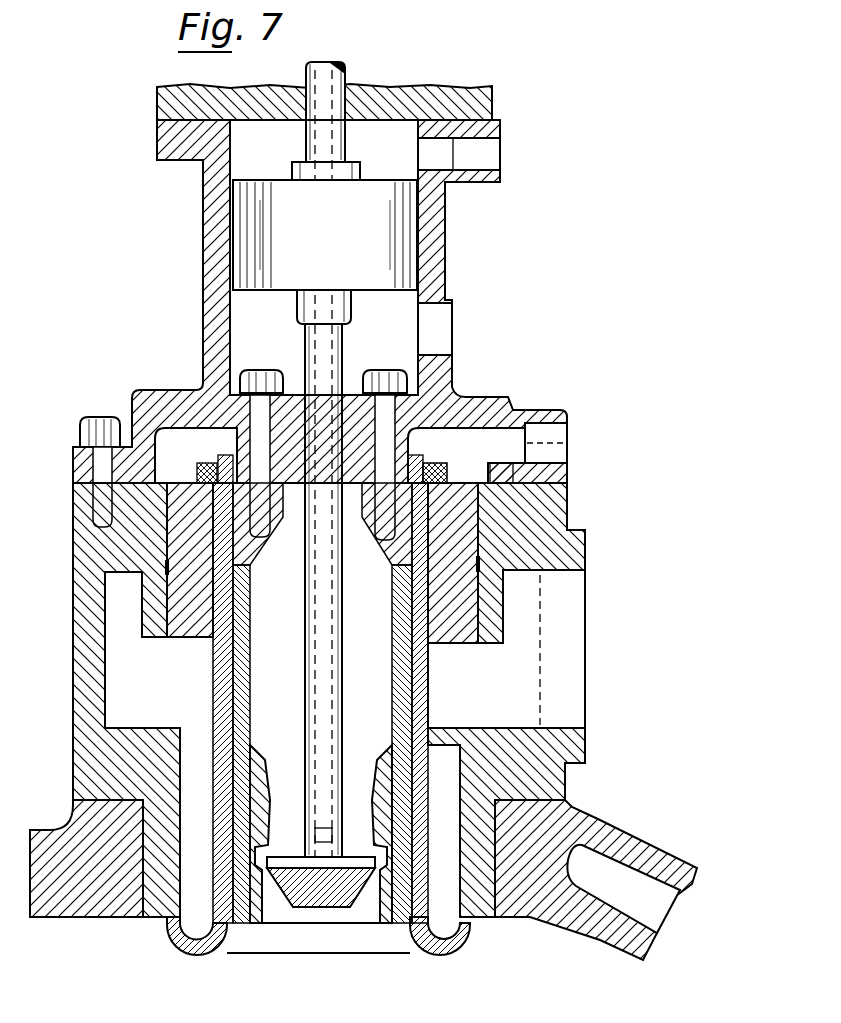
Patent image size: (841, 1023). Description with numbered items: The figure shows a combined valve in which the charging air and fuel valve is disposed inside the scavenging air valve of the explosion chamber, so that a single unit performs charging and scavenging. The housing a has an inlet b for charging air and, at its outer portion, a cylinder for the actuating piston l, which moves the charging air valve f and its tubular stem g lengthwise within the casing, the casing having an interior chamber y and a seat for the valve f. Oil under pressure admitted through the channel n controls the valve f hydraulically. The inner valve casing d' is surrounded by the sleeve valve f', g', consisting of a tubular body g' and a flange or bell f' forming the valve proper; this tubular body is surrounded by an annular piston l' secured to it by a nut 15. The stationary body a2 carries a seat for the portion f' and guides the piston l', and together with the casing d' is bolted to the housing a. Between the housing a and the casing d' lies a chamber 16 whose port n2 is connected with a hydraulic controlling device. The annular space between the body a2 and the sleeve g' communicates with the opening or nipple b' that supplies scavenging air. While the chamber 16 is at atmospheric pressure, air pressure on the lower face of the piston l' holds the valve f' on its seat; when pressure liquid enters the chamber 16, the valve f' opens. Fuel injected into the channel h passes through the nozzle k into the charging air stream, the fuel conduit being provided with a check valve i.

The longitudinal channel h is at (337, 66).
The actuating piston l is at (325, 235).
The channel n is at (497, 153).
The housing a is at (435, 266).
The inlet b is at (464, 323).
The chamber 16 is at (436, 438).
The nut 15 is at (447, 465).
The port n2 is at (558, 444).
The interior chamber y is at (513, 530).
The opening or nipple b' is at (617, 639).
The annular piston l' is at (528, 649).
The tubular stem g is at (259, 703).
The sleeve g' is at (422, 703).
The check valve i is at (312, 835).
The nozzle k is at (308, 878).
The charging air valve f is at (321, 876).
The inner valve casing d' is at (332, 953).
The sleeve valve f' is at (325, 958).
The stationary body a2 is at (497, 906).